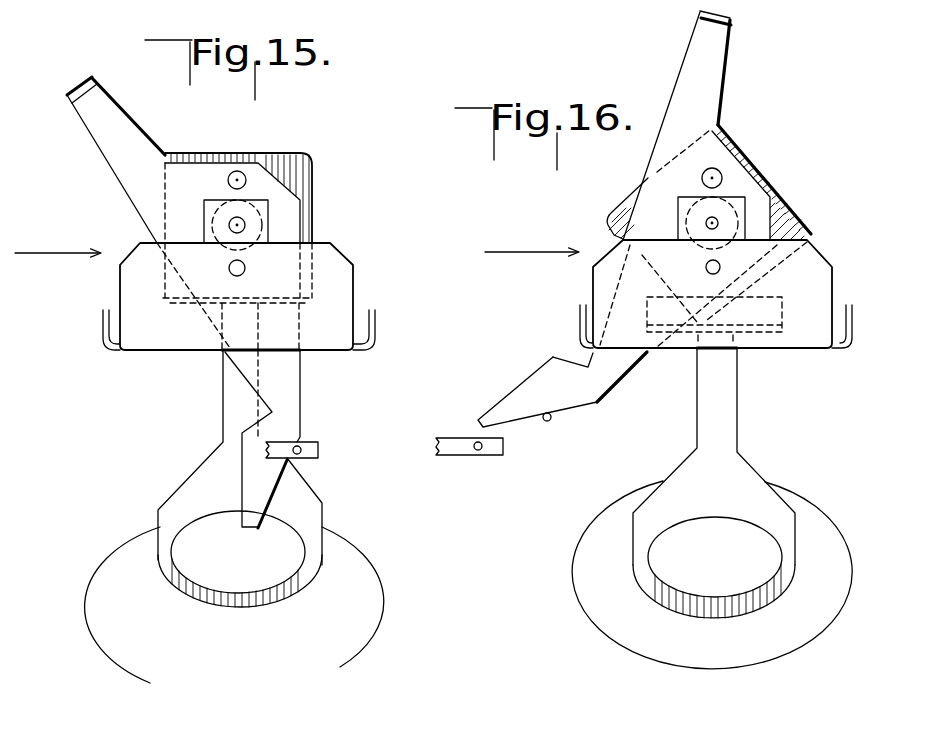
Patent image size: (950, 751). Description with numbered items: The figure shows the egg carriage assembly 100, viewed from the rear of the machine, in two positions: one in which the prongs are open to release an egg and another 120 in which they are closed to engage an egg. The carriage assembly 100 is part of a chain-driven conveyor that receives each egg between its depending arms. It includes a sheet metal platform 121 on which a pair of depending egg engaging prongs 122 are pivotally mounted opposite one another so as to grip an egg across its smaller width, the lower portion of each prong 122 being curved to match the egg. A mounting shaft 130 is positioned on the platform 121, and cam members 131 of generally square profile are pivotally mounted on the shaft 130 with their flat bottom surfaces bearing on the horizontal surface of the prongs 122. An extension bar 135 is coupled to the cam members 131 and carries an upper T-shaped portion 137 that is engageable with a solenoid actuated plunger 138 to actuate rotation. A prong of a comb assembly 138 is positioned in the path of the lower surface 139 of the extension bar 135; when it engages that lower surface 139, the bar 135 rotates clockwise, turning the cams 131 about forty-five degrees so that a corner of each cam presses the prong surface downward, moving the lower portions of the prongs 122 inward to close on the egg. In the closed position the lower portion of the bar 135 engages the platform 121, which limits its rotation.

In FIG. 15, the carriage assembly 100 is at (385, 325).
In FIG. 16, the ski binding assembly (alternate position) 120 is at (848, 287).
In FIG. 15, the sheet metal platform 121 is at (347, 257).
In FIG. 16, the sheet metal platform 121 is at (608, 250).
In FIG. 15, the egg engaging prong 122 is at (316, 490).
In FIG. 16, the egg engaging prong 122 is at (734, 405).
In FIG. 15, the mounting shaft 130 is at (266, 218).
In FIG. 16, the mounting shaft 130 is at (714, 222).
In FIG. 15, the cam member 131 is at (307, 152).
In FIG. 16, the cam member 131 is at (752, 168).
In FIG. 15, the extension bar 135 is at (131, 121).
In FIG. 16, the extension bar 135 is at (733, 62).
In FIG. 15, the upper T-shaped portion 137 is at (89, 75).
In FIG. 16, the upper T-shaped portion 137 is at (735, 13).
In FIG. 15, the comb assembly 138 is at (316, 446).
In FIG. 16, the comb assembly 138 is at (448, 438).
In FIG. 15, the lower surface of extension bar 139 is at (273, 497).
In FIG. 16, the lower surface of extension bar 139 is at (553, 415).